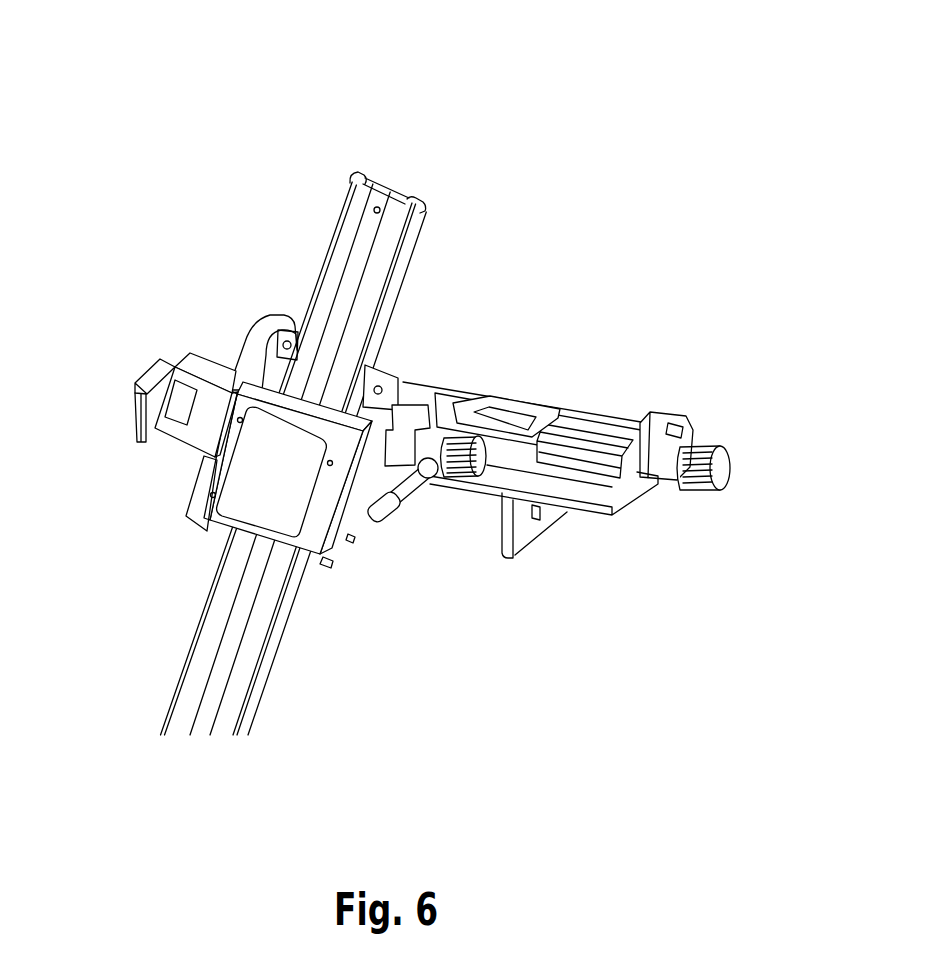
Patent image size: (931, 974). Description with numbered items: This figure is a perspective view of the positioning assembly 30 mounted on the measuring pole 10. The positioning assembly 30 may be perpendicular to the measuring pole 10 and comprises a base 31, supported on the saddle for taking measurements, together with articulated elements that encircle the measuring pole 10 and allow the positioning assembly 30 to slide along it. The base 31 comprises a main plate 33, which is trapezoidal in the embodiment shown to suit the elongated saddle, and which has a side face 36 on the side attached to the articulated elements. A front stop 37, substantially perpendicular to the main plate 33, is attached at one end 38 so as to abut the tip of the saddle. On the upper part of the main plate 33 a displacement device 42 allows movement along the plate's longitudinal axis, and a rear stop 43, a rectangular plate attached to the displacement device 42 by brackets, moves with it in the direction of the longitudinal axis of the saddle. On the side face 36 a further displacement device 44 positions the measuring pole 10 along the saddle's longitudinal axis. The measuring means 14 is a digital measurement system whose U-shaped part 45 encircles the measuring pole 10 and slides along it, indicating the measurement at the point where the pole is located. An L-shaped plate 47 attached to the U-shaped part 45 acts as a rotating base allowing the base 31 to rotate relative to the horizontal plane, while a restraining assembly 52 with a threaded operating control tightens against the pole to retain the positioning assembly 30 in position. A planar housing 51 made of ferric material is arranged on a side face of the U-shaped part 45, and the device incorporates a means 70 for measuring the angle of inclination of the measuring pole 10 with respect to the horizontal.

The measuring pole 10 is at (307, 225).
The measuring means 14 is at (297, 553).
The positioning assembly 30 is at (568, 197).
The base 31 is at (650, 386).
The main plate 33 is at (480, 390).
The side face 36 is at (594, 510).
The front stop 37 is at (130, 428).
The end 38 is at (167, 362).
The displacement device 42 is at (707, 490).
The rear stop 43 is at (525, 533).
The displacement device 44 is at (439, 446).
The U-shaped part 45 is at (396, 385).
The L-shaped plate 47 is at (272, 327).
The planar housing 51 is at (183, 518).
The restraining assembly 52 is at (383, 543).
The means for measuring the angle of inclination 70 is at (167, 443).